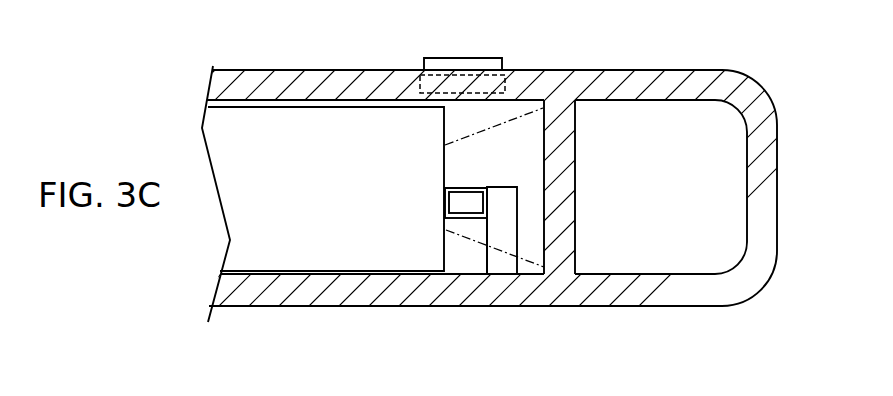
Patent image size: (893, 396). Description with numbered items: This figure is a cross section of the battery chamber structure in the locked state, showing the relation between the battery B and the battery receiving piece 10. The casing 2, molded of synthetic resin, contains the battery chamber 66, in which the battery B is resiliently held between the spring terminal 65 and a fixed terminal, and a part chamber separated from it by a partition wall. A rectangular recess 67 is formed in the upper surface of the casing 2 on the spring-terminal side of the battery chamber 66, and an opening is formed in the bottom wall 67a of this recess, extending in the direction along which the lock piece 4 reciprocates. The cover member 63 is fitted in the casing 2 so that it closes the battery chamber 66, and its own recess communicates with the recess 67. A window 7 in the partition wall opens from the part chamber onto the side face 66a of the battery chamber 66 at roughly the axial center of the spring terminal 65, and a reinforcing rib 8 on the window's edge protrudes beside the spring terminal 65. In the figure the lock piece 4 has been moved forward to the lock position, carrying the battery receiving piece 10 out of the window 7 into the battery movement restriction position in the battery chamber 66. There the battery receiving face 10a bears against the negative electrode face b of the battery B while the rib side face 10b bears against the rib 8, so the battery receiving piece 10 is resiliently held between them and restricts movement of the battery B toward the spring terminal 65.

The casing 2 is at (740, 304).
The cover member 63 is at (332, 80).
The side face of the battery chamber 66a is at (545, 152).
The battery chamber 66 is at (527, 232).
The lock piece 4 is at (468, 58).
The bottom wall of the recess 67a is at (444, 88).
The rectangular recess 67 is at (488, 86).
The battery B is at (243, 223).
The battery receiving piece 10 is at (453, 209).
The window 7 is at (479, 206).
The battery receiving face 10a is at (444, 190).
The rib side face 10b is at (497, 189).
The reinforcing rib 8 is at (500, 194).
The negative electrode face b is at (452, 260).
The spring terminal 65 is at (525, 262).